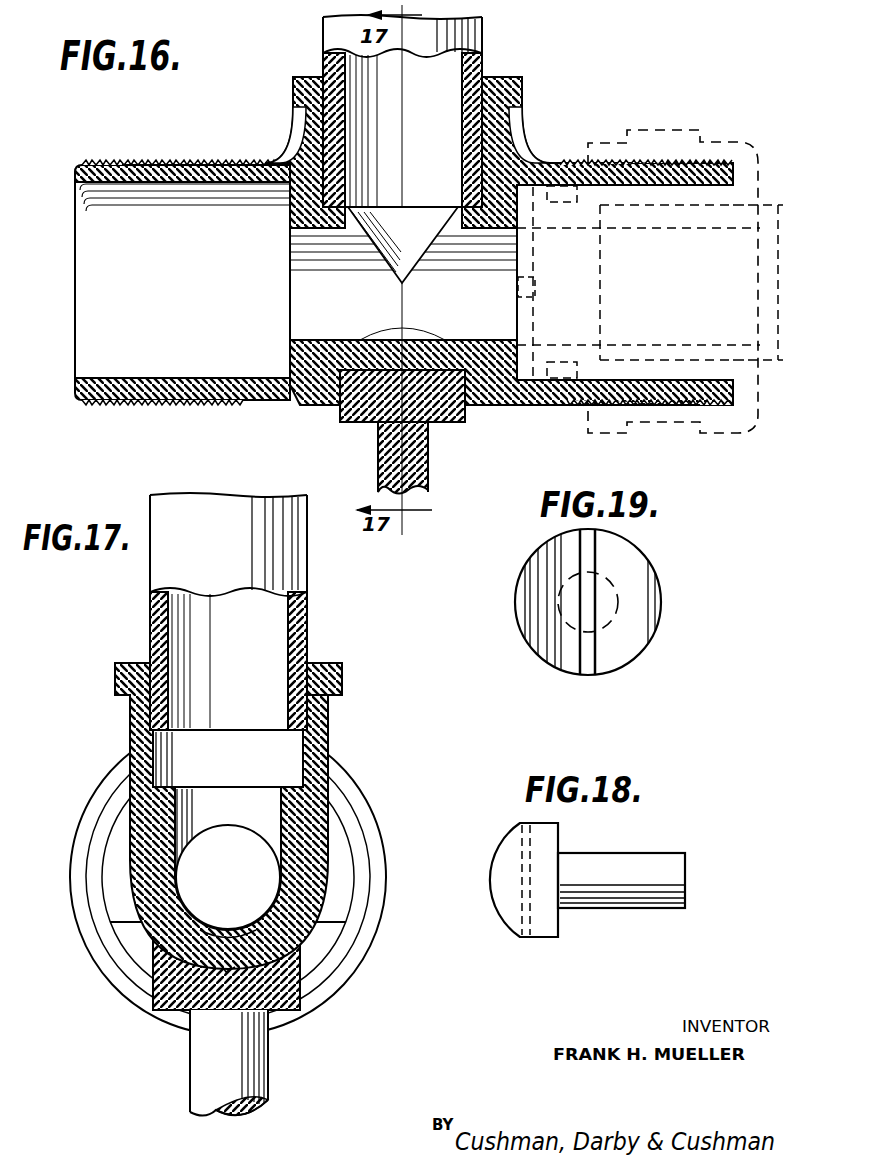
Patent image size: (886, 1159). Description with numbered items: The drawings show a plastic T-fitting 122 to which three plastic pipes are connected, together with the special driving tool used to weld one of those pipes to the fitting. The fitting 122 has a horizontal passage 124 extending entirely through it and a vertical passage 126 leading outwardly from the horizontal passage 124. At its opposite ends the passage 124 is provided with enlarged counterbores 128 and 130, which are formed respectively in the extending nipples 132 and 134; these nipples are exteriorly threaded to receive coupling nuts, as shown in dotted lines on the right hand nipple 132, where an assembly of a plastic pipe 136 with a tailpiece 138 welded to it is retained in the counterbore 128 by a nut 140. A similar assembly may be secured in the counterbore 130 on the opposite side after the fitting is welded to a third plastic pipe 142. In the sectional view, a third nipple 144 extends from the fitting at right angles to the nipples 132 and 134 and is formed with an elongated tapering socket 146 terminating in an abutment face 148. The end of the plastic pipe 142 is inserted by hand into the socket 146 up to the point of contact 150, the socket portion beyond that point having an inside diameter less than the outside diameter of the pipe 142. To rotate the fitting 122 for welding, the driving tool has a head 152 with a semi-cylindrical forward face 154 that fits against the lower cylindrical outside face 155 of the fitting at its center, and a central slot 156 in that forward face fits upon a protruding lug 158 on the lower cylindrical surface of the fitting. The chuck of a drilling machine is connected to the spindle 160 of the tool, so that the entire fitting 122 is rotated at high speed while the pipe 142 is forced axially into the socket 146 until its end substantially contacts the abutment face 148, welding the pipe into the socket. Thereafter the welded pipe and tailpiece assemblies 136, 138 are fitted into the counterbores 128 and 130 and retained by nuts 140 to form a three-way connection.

In FIG. 16, the T-fitting 122 is at (507, 154).
In FIG. 17, the T-fitting 122 is at (110, 833).
In FIG. 16, the horizontal passage 124 is at (350, 323).
In FIG. 16, the vertical passage 126 is at (440, 226).
In FIG. 17, the vertical passage 126 is at (257, 808).
In FIG. 16, the counterbore 128 is at (552, 398).
In FIG. 16, the counterbore 130 is at (266, 159).
In FIG. 16, the nipple 132 is at (575, 394).
In FIG. 16, the nipple 134 is at (223, 164).
In FIG. 16, the plastic pipe 136 is at (691, 215).
In FIG. 16, the tailpiece 138 is at (646, 202).
In FIG. 16, the nut 140 is at (695, 128).
In FIG. 16, the plastic pipe 142 is at (473, 79).
In FIG. 17, the plastic pipe 142 is at (295, 582).
In FIG. 17, the third nipple 144 is at (322, 713).
In FIG. 17, the tapering socket 146 is at (300, 746).
In FIG. 17, the abutment face 148 is at (300, 774).
In FIG. 17, the point of contact 150 is at (150, 739).
In FIG. 16, the head 152 is at (452, 419).
In FIG. 17, the head 152 is at (168, 994).
In FIG. 18, the head 152 is at (545, 930).
In FIG. 17, the semi-cylindrical forward face 154 is at (317, 1007).
In FIG. 19, the semi-cylindrical forward face 154 is at (563, 655).
In FIG. 17, the lower cylindrical outside face 155 is at (222, 964).
In FIG. 17, the central slot 156 is at (190, 1014).
In FIG. 19, the central slot 156 is at (590, 660).
In FIG. 16, the protruding lug 158 is at (403, 245).
In FIG. 17, the protruding lug 158 is at (234, 964).
In FIG. 16, the spindle 160 is at (384, 453).
In FIG. 17, the spindle 160 is at (204, 1072).
In FIG. 18, the spindle 160 is at (613, 863).